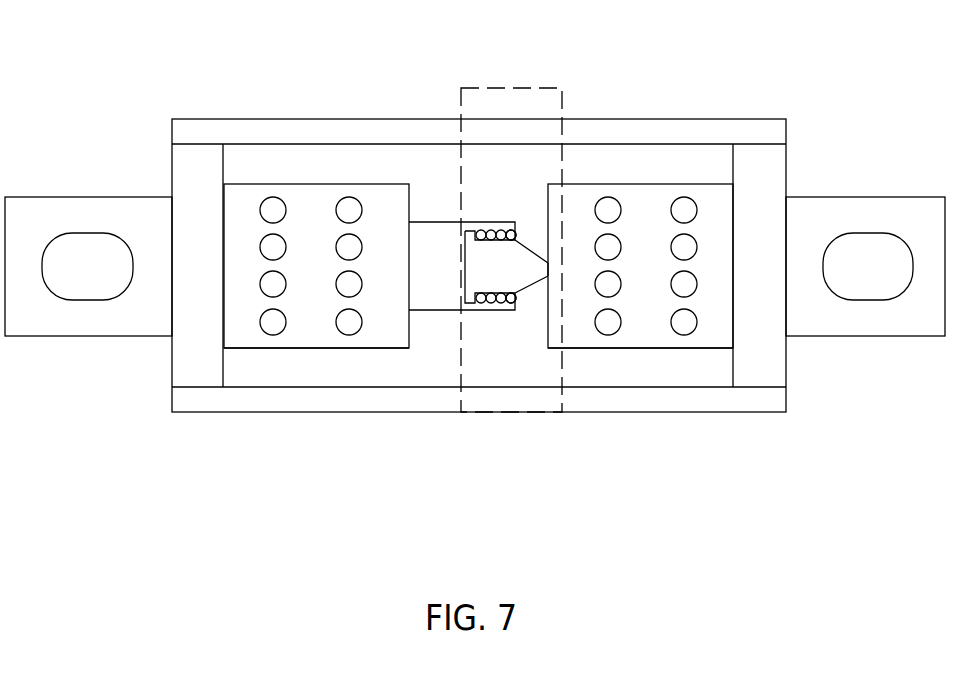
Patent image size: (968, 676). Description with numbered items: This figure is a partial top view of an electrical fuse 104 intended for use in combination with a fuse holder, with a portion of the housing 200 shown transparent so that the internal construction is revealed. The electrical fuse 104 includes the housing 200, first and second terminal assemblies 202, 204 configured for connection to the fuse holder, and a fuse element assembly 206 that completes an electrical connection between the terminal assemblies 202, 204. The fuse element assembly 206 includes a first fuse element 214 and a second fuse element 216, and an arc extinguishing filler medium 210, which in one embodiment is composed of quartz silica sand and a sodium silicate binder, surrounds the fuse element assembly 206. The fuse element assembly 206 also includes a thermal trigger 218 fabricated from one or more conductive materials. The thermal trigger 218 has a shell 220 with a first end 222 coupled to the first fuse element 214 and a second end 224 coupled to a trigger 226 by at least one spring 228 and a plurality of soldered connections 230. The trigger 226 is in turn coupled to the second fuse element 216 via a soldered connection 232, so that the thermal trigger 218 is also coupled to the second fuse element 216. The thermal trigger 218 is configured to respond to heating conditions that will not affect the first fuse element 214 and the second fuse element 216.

The electrical fuse 104 is at (781, 98).
The housing 200 is at (229, 119).
The first terminal assembly 202 is at (172, 153).
The second terminal assembly 204 is at (786, 153).
The fuse element assembly 206 is at (706, 355).
The arc extinguishing filler medium 210 is at (357, 165).
The first fuse element 214 is at (276, 348).
The second fuse element 216 is at (648, 348).
The thermal trigger 218 is at (532, 247).
The shell 220 is at (432, 222).
The first end 222 is at (408, 297).
The second end 224 is at (517, 310).
The trigger 226 is at (486, 252).
The spring 228 is at (486, 305).
The soldered connections 230 is at (512, 229).
The soldered connection 232 is at (553, 262).